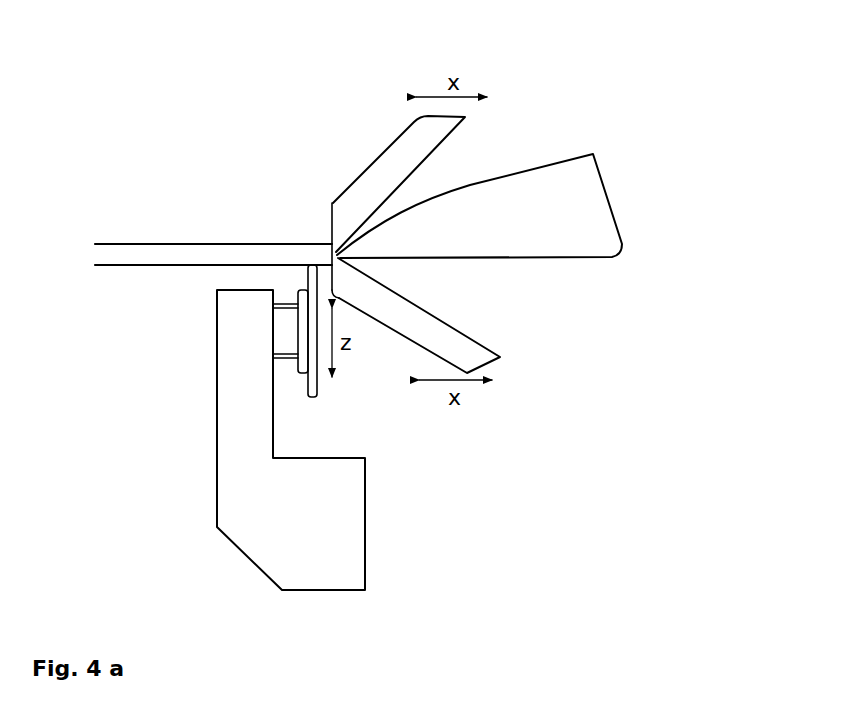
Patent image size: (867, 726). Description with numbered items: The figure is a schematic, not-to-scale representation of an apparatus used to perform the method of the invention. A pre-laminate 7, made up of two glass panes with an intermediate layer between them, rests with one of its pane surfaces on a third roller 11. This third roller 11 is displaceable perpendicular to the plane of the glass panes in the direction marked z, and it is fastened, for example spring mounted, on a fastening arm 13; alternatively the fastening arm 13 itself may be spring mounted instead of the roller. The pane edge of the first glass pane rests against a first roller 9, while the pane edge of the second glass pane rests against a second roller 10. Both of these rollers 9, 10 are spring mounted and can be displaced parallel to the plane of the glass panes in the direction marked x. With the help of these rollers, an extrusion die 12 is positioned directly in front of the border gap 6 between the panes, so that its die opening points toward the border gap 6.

The border gap 6 is at (324, 254).
The pre-laminate 7 is at (213, 255).
The first roller 9 is at (445, 343).
The second roller 10 is at (392, 162).
The third roller 11 is at (310, 323).
The extrusion die 12 is at (390, 247).
The fastening arm 13 is at (257, 473).